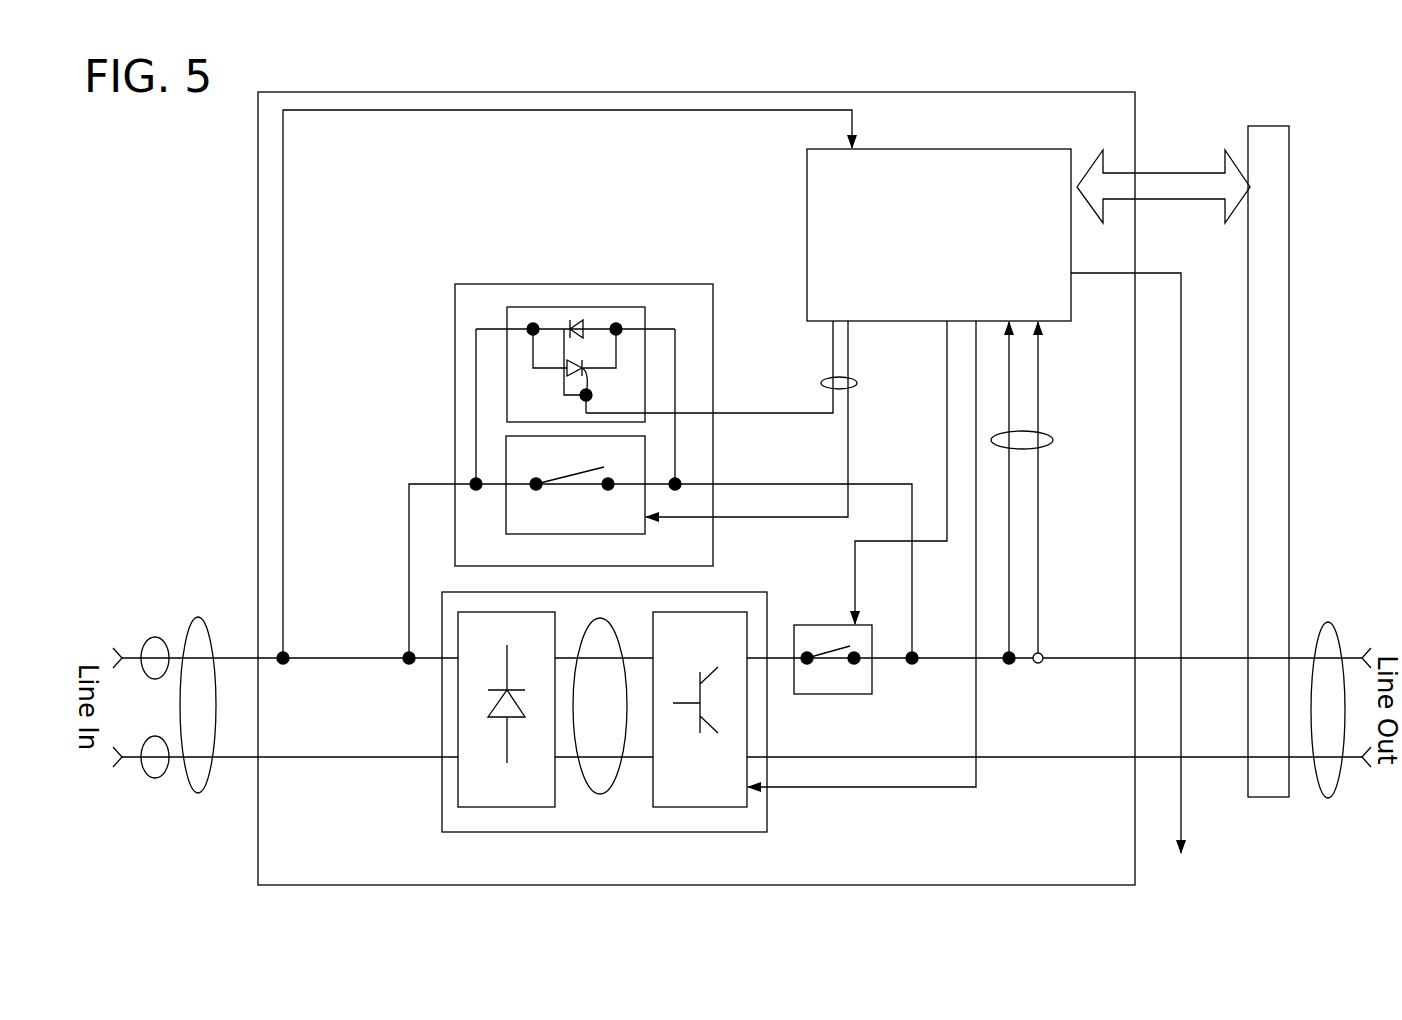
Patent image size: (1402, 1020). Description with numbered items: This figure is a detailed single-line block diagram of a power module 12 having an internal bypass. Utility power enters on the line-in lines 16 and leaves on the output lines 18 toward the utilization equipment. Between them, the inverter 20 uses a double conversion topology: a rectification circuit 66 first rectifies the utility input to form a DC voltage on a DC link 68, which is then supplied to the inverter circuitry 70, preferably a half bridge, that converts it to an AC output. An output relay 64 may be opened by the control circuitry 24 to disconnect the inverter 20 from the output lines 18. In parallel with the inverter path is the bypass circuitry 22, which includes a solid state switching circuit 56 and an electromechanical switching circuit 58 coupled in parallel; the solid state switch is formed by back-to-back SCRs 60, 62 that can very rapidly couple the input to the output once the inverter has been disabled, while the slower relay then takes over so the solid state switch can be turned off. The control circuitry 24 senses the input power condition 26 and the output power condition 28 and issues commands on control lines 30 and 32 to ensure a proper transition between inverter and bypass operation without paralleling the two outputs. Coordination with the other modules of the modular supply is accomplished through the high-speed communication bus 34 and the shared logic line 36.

The power module 12 is at (258, 212).
The line-in lines 16 is at (197, 793).
The output lines 18 is at (1327, 799).
The inverter 20 is at (668, 832).
The bypass circuitry 22 is at (635, 284).
The control circuitry 24 is at (900, 149).
The input sensing 26 is at (283, 255).
The output sensing 28 is at (1043, 432).
The control line 30 is at (855, 383).
The control line 32 is at (893, 787).
The high-speed communication bus 34 is at (1268, 285).
The shared logic line 36 is at (1160, 273).
The solid state switching circuit 56 is at (507, 325).
The electromechanical switching circuit 58 is at (523, 436).
The SCR 60 is at (575, 320).
The SCR 62 is at (568, 368).
The output relay 64 is at (835, 625).
The rectification circuit 66 is at (507, 807).
The DC link 68 is at (600, 795).
The inverter circuitry 70 is at (712, 807).